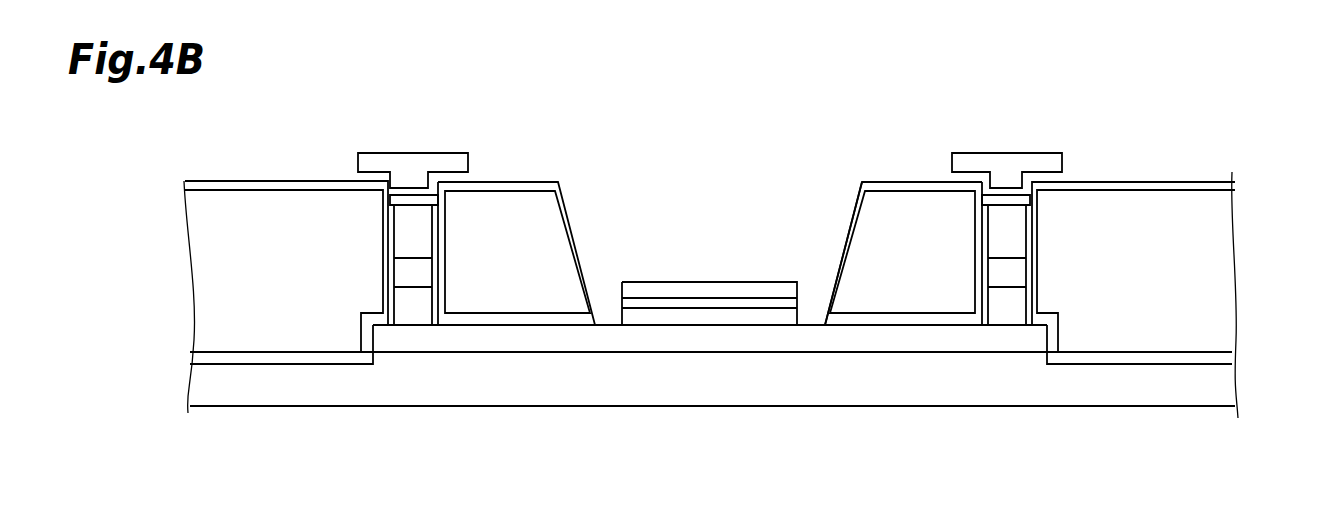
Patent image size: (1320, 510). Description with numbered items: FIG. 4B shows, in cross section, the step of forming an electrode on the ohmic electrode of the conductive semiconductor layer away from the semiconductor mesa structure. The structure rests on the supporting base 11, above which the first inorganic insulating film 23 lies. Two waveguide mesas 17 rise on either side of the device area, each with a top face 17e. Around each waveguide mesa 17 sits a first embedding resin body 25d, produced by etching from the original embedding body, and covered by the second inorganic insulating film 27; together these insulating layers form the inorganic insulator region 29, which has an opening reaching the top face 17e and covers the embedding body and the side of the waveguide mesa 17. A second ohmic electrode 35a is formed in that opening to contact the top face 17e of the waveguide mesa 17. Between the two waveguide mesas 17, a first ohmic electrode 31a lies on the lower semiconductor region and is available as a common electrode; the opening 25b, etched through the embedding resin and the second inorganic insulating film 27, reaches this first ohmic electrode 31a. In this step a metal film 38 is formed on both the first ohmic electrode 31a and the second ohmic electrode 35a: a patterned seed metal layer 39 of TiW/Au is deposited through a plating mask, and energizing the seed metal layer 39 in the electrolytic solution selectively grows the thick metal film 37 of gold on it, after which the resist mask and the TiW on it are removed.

The supporting base 11 is at (1230, 390).
The waveguide mesa 17 is at (418, 210).
The top face of the waveguide mesa 17e is at (416, 195).
The first inorganic insulating film 23 is at (380, 255).
The opening 25b is at (823, 237).
The first embedding resin body 25d is at (255, 253).
The second inorganic insulating film 27 is at (213, 180).
The inorganic insulator region 29 is at (190, 127).
The first ohmic electrode 31a is at (726, 320).
The second ohmic electrode 35a is at (403, 190).
The thick metal film 37 is at (373, 152).
The metal film 38 is at (290, 93).
The seed metal layer 39 is at (360, 172).